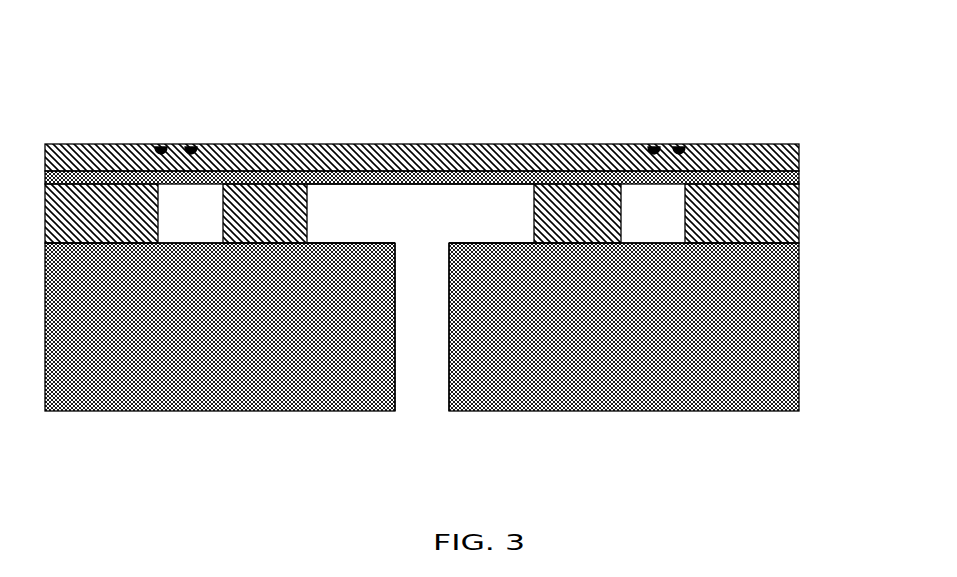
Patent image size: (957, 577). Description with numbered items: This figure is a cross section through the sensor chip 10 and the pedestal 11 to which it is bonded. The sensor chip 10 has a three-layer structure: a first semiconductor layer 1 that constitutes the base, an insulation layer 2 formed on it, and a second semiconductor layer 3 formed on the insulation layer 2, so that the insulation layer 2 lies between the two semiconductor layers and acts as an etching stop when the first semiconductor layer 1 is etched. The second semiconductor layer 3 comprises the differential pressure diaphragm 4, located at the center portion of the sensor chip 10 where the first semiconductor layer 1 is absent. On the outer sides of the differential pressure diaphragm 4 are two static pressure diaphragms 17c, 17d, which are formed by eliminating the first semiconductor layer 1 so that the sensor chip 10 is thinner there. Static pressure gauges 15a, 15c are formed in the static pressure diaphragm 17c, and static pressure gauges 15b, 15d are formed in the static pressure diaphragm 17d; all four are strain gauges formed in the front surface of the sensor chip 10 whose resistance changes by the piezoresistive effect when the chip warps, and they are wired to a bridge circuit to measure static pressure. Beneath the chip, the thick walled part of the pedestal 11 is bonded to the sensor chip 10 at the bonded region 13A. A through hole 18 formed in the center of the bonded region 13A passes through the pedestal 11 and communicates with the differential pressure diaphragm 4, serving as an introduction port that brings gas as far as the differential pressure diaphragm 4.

The first semiconductor layer 1 is at (452, 213).
The insulation layer 2 is at (792, 172).
The second semiconductor layer 3 is at (792, 154).
The differential pressure diaphragm 4 is at (517, 103).
The sensor chip 10 is at (474, 193).
The pedestal 11 is at (792, 330).
The bonded region 13A is at (99, 248).
The static pressure gauge 15a is at (153, 138).
The static pressure gauge 15b is at (645, 138).
The static pressure gauge 15c is at (182, 138).
The static pressure gauge 15d is at (672, 138).
The static pressure diaphragm 17c is at (190, 93).
The static pressure diaphragm 17d is at (681, 95).
The through hole 18 is at (388, 378).